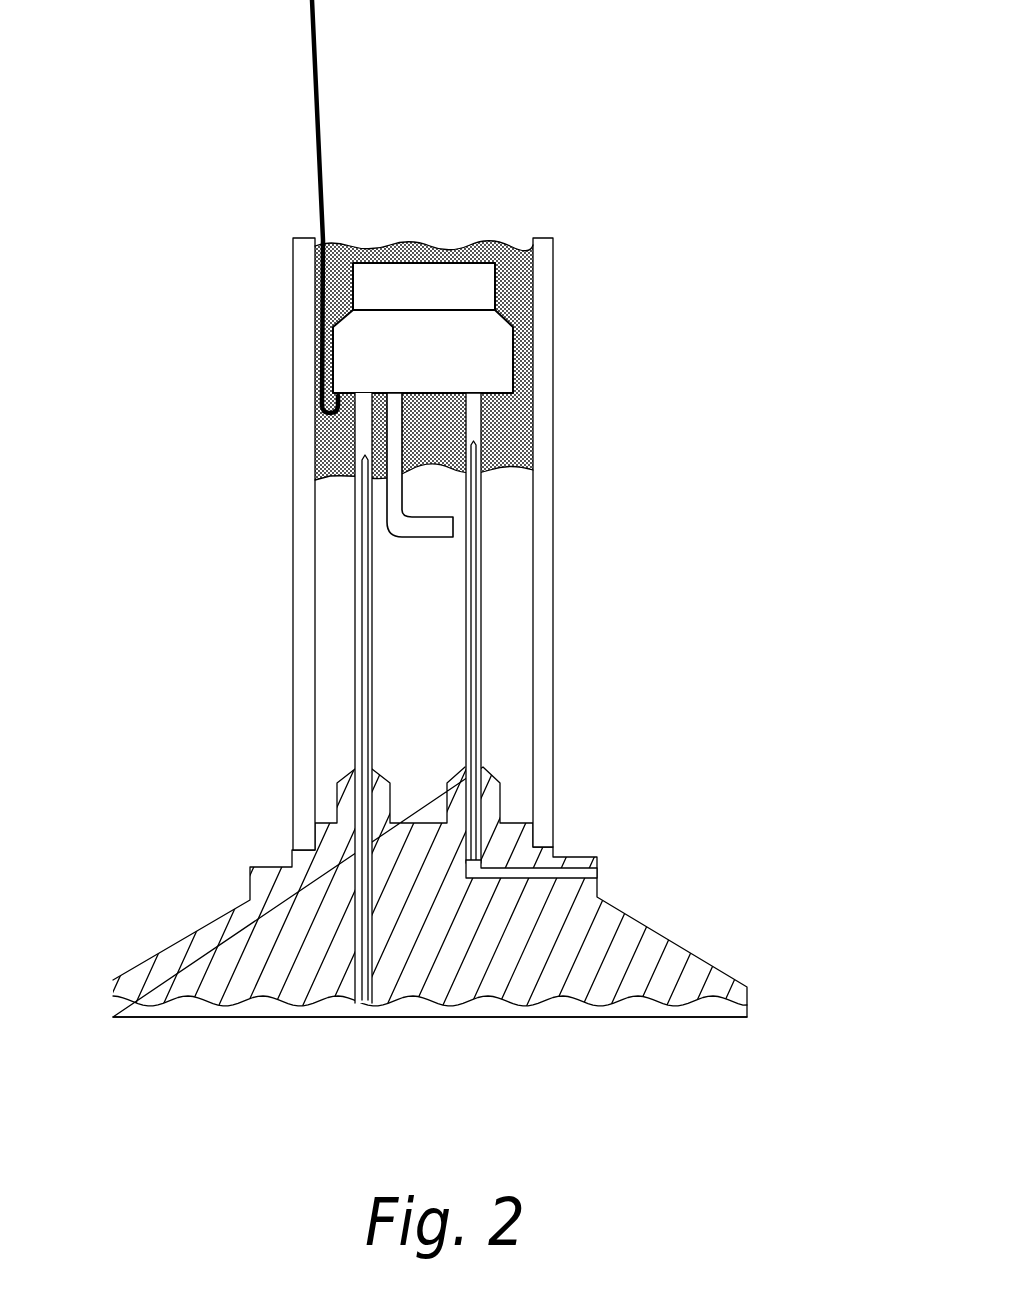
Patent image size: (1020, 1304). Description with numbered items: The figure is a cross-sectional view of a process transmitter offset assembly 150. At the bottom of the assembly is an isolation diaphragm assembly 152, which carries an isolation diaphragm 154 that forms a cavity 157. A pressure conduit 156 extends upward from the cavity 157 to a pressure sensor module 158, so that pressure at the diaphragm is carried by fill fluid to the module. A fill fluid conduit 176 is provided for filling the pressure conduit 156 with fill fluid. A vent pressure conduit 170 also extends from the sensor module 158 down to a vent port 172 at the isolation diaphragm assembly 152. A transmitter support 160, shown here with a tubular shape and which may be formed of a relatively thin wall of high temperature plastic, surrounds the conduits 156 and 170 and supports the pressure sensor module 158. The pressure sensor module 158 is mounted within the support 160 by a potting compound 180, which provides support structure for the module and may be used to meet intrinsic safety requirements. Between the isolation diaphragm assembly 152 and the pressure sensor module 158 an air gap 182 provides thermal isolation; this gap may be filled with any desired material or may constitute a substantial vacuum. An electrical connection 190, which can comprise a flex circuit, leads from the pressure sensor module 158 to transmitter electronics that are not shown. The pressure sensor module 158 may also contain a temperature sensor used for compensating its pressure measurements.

The process transmitter offset assembly 150 is at (195, 821).
The isolation diaphragm assembly 152 is at (688, 950).
The isolation diaphragm 154 is at (537, 1007).
The pressure conduit 156 is at (387, 1008).
The cavity 157 is at (674, 1016).
The pressure sensor module 158 is at (404, 335).
The transmitter support 160 is at (555, 720).
The vent pressure conduit 170 is at (487, 616).
The vent port 172 is at (600, 878).
The fill fluid conduit 176 is at (455, 529).
The potting compound 180 is at (503, 290).
The air gap 182 is at (333, 737).
The electrical connection 190 is at (320, 47).